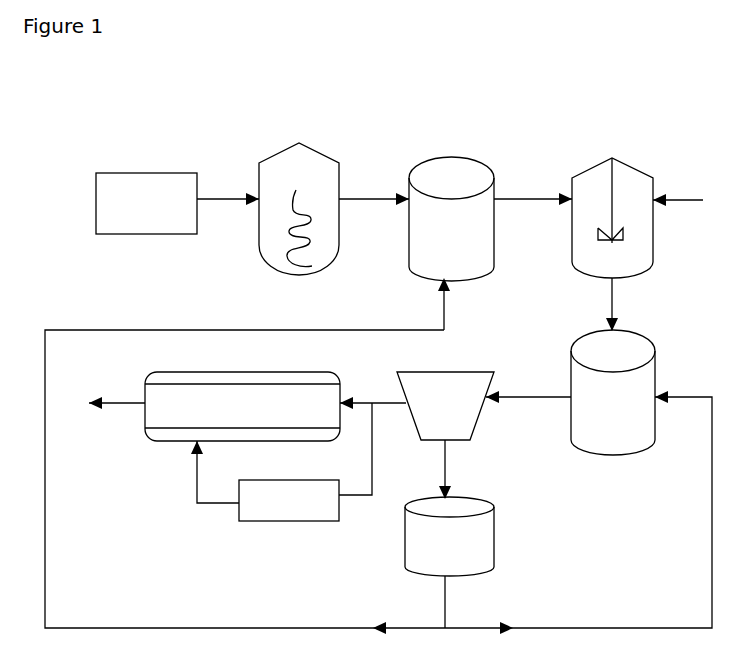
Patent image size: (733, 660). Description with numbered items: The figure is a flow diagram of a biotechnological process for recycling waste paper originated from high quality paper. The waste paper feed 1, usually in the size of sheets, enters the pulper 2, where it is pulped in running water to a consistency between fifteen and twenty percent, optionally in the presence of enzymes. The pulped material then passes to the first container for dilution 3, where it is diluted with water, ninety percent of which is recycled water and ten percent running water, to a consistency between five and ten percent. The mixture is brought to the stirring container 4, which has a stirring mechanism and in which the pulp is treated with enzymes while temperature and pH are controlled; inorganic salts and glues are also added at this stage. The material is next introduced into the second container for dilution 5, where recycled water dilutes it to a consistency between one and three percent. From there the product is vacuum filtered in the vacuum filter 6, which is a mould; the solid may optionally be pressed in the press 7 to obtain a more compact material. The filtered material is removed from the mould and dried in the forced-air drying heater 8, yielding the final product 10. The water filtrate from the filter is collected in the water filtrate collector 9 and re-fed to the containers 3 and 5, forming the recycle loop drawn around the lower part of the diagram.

The waste paper feed 1 is at (177, 203).
The pulper 2 is at (334, 209).
The first container for dilution 3 is at (490, 219).
The stirring container 4 is at (612, 244).
The second container for dilution 5 is at (570, 392).
The vacuum filter 6 is at (416, 435).
The press 7 is at (265, 481).
The drying heater 8 is at (242, 406).
The water filtrate collector 9 is at (449, 562).
The final product 10 is at (102, 403).